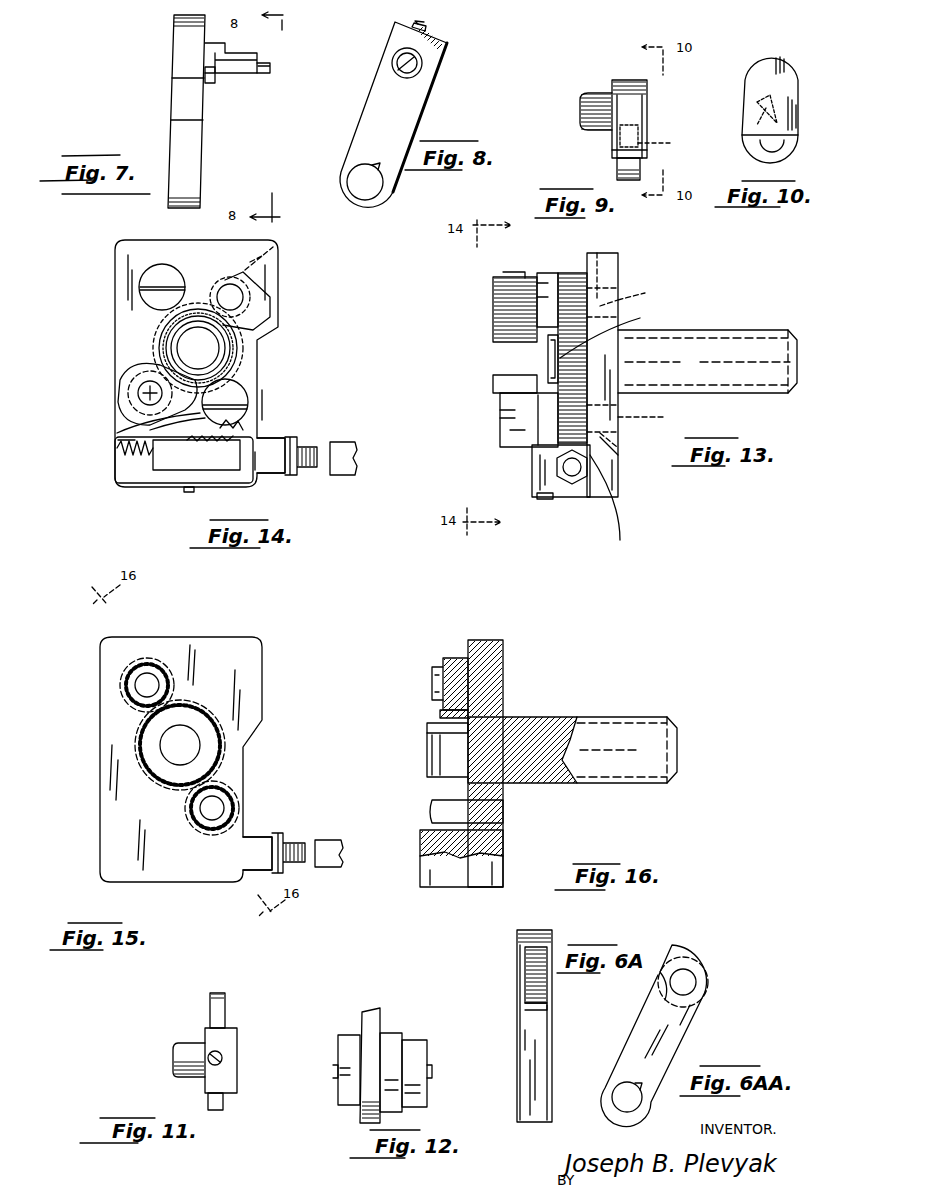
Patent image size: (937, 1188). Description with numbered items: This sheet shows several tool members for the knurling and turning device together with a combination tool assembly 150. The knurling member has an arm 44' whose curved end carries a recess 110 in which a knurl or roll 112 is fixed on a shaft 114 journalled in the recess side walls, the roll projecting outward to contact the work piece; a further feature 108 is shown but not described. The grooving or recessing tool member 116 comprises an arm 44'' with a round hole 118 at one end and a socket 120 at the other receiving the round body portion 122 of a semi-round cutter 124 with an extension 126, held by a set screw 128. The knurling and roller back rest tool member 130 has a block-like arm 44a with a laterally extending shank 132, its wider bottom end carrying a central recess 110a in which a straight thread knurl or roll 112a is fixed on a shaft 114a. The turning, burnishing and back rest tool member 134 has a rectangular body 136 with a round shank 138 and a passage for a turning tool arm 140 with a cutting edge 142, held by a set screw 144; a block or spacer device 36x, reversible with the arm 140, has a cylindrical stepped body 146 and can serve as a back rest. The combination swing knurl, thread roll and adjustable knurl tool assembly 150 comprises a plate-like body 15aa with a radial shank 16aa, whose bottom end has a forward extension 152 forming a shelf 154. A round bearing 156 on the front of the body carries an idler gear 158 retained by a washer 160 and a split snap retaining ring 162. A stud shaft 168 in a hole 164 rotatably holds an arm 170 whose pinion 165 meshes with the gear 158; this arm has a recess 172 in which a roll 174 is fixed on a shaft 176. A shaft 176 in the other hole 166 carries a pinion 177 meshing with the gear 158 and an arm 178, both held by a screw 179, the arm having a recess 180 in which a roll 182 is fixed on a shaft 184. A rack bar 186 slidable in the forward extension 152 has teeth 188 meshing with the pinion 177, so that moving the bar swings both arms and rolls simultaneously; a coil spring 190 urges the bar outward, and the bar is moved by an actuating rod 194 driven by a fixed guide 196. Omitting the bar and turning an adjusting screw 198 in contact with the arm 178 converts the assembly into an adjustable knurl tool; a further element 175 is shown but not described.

In FIG. 7, the arm 44'' is at (198, 111).
In FIG. 8, the arm 44'' is at (405, 114).
In FIG. 7, the grooving or recessing tool member 116 is at (160, 84).
In FIG. 8, the grooving or recessing tool member 116 is at (360, 83).
In FIG. 8, the round hole 118 is at (362, 199).
In FIG. 8, the socket 120 is at (422, 67).
In FIG. 7, the round body portion 122 is at (212, 84).
In FIG. 8, the round body portion 122 is at (397, 56).
In FIG. 7, the semi-round cutter 124 is at (247, 74).
In FIG. 8, the semi-round cutter 124 is at (395, 78).
In FIG. 7, the extension 126 is at (271, 67).
In FIG. 8, the set screw 128 is at (426, 25).
In FIG. 10, the knurling and roller back rest tool member 130 is at (809, 87).
In FIG. 9, the shank 132 is at (601, 91).
In FIG. 9, the block-like arm 44a is at (640, 131).
In FIG. 10, the block-like arm 44a is at (798, 109).
In FIG. 9, the central recess 110a is at (675, 144).
In FIG. 9, the straight thread knurl or roll 112a is at (617, 177).
In FIG. 10, the straight thread knurl or roll 112a is at (795, 150).
In FIG. 10, the shaft 114a is at (768, 103).
In FIG. 11, the turning, burnishing, back rest tool member 134 is at (247, 1062).
In FIG. 11, the rectangular-shaped body 136 is at (225, 1080).
In FIG. 11, the round shank 138 is at (188, 1042).
In FIG. 11, the turning tool member or arm 140 is at (215, 1012).
In FIG. 12, the turning tool member or arm 140 is at (372, 1015).
In FIG. 14, the cutting edge 142 is at (117, 455).
In FIG. 11, the cutting edge 142 is at (214, 995).
In FIG. 11, the set screw 144 is at (212, 1063).
In FIG. 12, the cylindrical stepped body 146 is at (415, 1053).
In FIG. 12, the block or spacer device 36x is at (400, 1027).
In FIG. 14, the plate-like body 15aa is at (118, 251).
In FIG. 13, the plate-like body 15aa is at (618, 263).
In FIG. 15, the plate-like body 15aa is at (242, 652).
In FIG. 16, the plate-like body 15aa is at (503, 643).
In FIG. 13, the shank 16aa is at (750, 332).
In FIG. 16, the shank 16aa is at (635, 716).
In FIG. 9, the combination swing knurl, thread roll and adjustable knurl tool assembly 150 is at (658, 102).
In FIG. 14, the combination swing knurl, thread roll and adjustable knurl tool assembly 150 is at (292, 306).
In FIG. 13, the combination swing knurl, thread roll and adjustable knurl tool assembly 150 is at (478, 309).
In FIG. 15, the combination swing knurl, thread roll and adjustable knurl tool assembly 150 is at (276, 691).
In FIG. 16, the combination swing knurl, thread roll and adjustable knurl tool assembly 150 is at (531, 667).
In FIG. 14, the forward extension 152 is at (262, 474).
In FIG. 13, the forward extension 152 is at (540, 473).
In FIG. 16, the forward extension 152 is at (422, 846).
In FIG. 13, the shelf 154 is at (543, 500).
In FIG. 14, the bearing 156 is at (200, 347).
In FIG. 16, the bearing 156 is at (520, 715).
In FIG. 14, the idler gear 158 is at (235, 368).
In FIG. 13, the idler gear 158 is at (618, 333).
In FIG. 15, the idler gear 158 is at (215, 770).
In FIG. 16, the idler gear 158 is at (440, 713).
In FIG. 13, the washer 160 is at (548, 363).
In FIG. 16, the washer 160 is at (445, 770).
In FIG. 14, the split snap retaining ring 162 is at (160, 350).
In FIG. 13, the split snap retaining ring 162 is at (548, 350).
In FIG. 16, the split snap retaining ring 162 is at (430, 730).
In FIG. 13, the hole 164 is at (597, 258).
In FIG. 13, the pinion 165 is at (573, 272).
In FIG. 15, the pinion 165 is at (132, 708).
In FIG. 16, the pinion 165 is at (452, 657).
In FIG. 13, the hole 166 is at (621, 460).
In FIG. 13, the stud shaft 168 is at (639, 293).
In FIG. 15, the stud shaft 168 is at (140, 683).
In FIG. 16, the stud shaft 168 is at (432, 668).
In FIG. 14, the arm 170 is at (196, 260).
In FIG. 13, the arm 170 is at (514, 272).
In FIG. 14, the recess 172 is at (280, 280).
In FIG. 14, the knurl or roll 174 is at (265, 328).
In FIG. 14, the screw 175 is at (158, 282).
In FIG. 14, the stud shaft 176 is at (270, 244).
In FIG. 13, the stud shaft 176 is at (652, 416).
In FIG. 15, the stud shaft 176 is at (218, 805).
In FIG. 16, the stud shaft 176 is at (430, 812).
In FIG. 14, the pinion 177 is at (207, 445).
In FIG. 13, the pinion 177 is at (619, 502).
In FIG. 15, the pinion 177 is at (195, 795).
In FIG. 16, the pinion 177 is at (460, 838).
In FIG. 14, the arm 178 is at (135, 428).
In FIG. 13, the arm 178 is at (510, 385).
In FIG. 14, the screw 179 is at (240, 397).
In FIG. 13, the screw 179 is at (505, 432).
In FIG. 14, the recess 180 is at (138, 393).
In FIG. 14, the knurl or roll 182 is at (122, 370).
In FIG. 14, the shaft 184 is at (133, 400).
In FIG. 14, the rack bar 186 is at (181, 460).
In FIG. 15, the rack bar 186 is at (258, 838).
In FIG. 14, the teeth 188 is at (196, 439).
In FIG. 14, the coil spring 190 is at (127, 461).
In FIG. 14, the actuating rod 194 is at (308, 470).
In FIG. 13, the actuating rod 194 is at (575, 477).
In FIG. 15, the actuating rod 194 is at (298, 842).
In FIG. 14, the fixed guide 196 is at (347, 441).
In FIG. 15, the fixed guide 196 is at (330, 863).
In FIG. 14, the adjusting screw 198 is at (189, 493).
In FIG. 13, the adjusting screw 198 is at (538, 500).
In FIG. 6A, the arm 44' is at (549, 1026).
In FIG. 6AA, the arm 44' is at (680, 1036).
In FIG. 6AA, the bore 108 is at (615, 1103).
In FIG. 6A, the recess 110 is at (533, 1010).
In FIG. 6AA, the recess 110 is at (710, 965).
In FIG. 6A, the knurl or roll 112 is at (525, 972).
In FIG. 6AA, the knurl or roll 112 is at (660, 1000).
In FIG. 6A, the shaft 114 is at (522, 965).
In FIG. 6AA, the shaft 114 is at (690, 975).